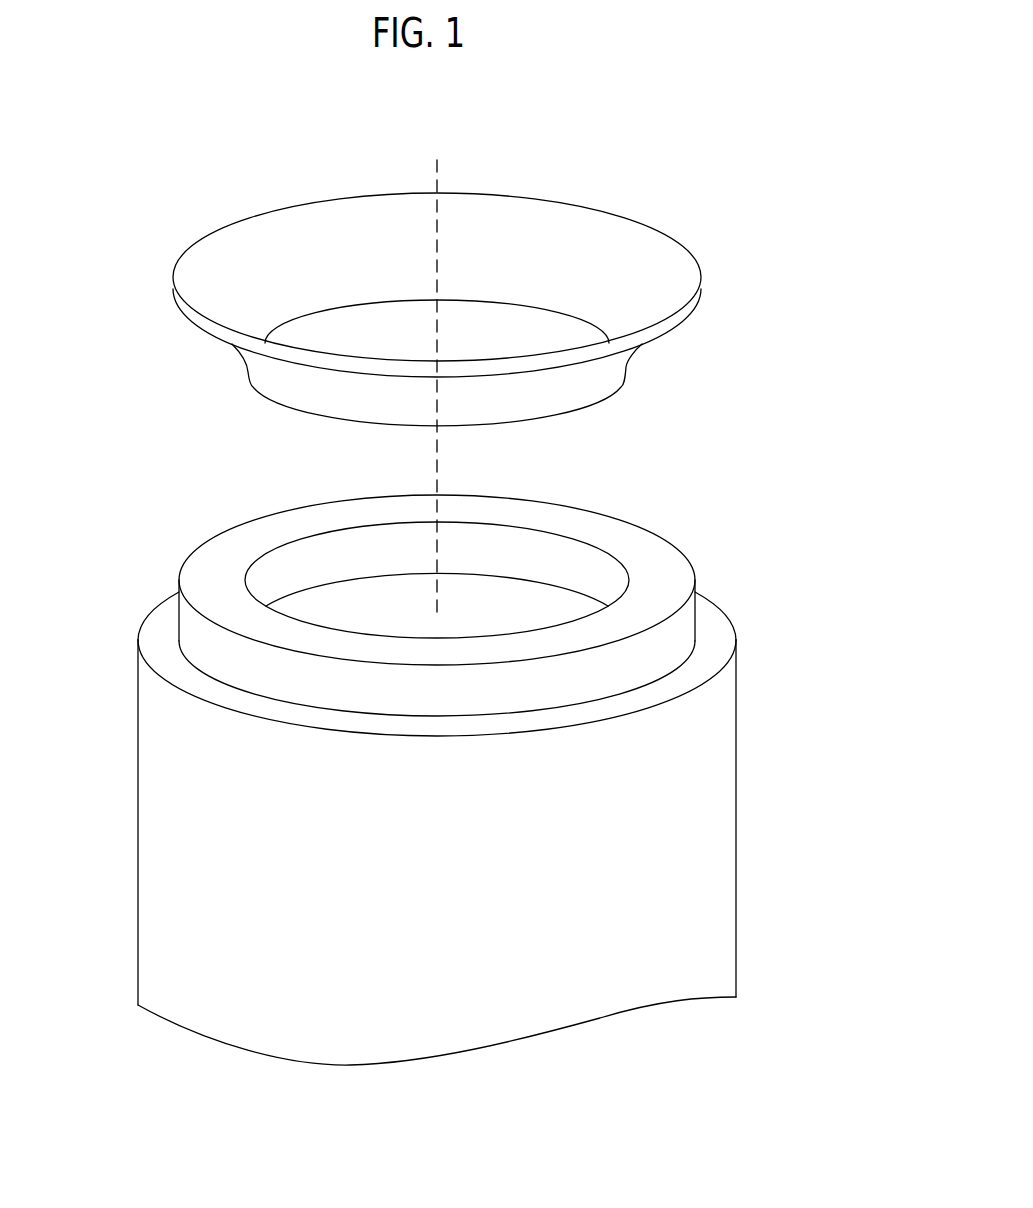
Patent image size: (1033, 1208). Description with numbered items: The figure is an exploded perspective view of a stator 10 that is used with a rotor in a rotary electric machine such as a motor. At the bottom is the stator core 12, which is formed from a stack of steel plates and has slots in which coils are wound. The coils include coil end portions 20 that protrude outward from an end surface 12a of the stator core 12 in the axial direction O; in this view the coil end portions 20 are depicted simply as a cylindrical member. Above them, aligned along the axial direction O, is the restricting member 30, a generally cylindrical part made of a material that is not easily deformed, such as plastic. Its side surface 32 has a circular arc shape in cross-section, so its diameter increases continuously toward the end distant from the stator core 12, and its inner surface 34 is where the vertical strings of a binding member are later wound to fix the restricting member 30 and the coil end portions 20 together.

The stator 10 is at (160, 437).
The stator core 12 is at (710, 824).
The end surface 12a is at (710, 632).
The coil end portions 20 is at (680, 553).
The restricting member 30 is at (677, 220).
The side surface 32 is at (640, 357).
The inner surface 34 is at (463, 233).
The axial direction O is at (437, 213).